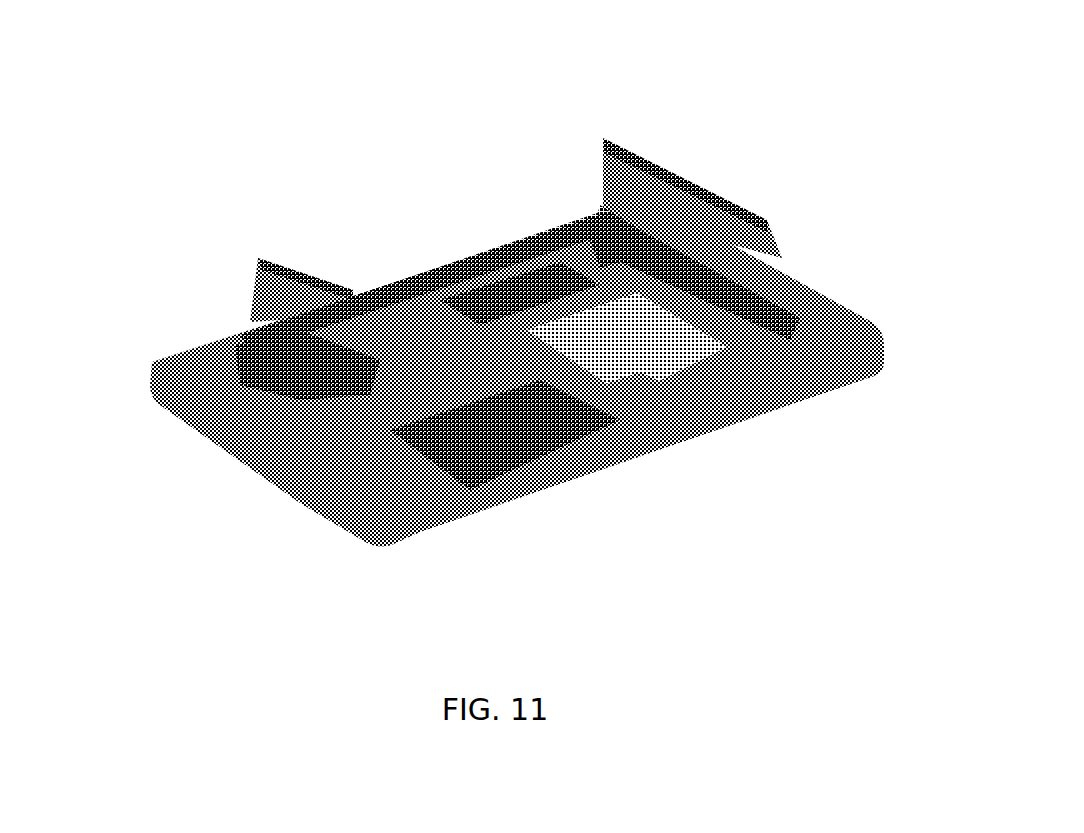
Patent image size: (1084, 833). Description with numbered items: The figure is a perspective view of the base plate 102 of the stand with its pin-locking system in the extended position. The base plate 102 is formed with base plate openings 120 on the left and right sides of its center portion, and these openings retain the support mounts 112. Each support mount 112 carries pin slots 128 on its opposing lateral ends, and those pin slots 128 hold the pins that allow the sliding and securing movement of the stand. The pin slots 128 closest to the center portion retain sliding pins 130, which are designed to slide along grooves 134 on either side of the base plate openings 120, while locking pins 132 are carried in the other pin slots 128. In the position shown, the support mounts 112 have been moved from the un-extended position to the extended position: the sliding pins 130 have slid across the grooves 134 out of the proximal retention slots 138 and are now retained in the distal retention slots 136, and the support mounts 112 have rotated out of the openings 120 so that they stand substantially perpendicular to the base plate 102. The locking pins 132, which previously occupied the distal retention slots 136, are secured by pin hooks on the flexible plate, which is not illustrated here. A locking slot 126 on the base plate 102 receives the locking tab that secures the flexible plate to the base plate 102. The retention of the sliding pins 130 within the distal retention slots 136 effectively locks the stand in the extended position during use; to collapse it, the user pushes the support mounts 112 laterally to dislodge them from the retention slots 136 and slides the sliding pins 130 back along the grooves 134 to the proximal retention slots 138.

The base plate 102 is at (150, 388).
The support mounts 112 is at (260, 307).
The base plate openings 120 is at (668, 355).
The locking slot 126 is at (580, 413).
The pin slots 128 is at (313, 270).
The sliding pins 130 is at (803, 365).
The locking pins 132 is at (257, 263).
The grooves 134 is at (490, 463).
The distal retention slots 136 is at (600, 268).
The proximal retention slots 138 is at (490, 325).